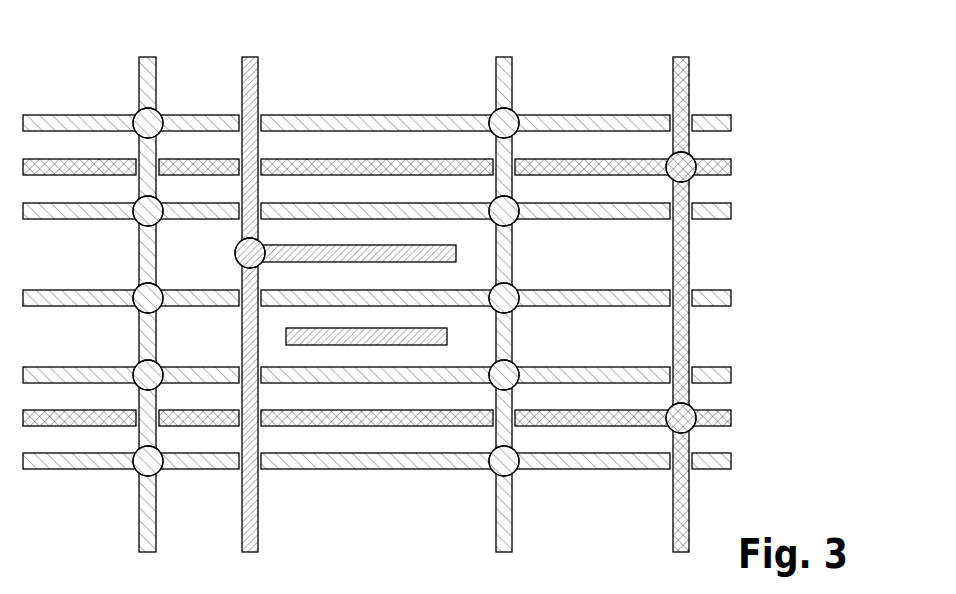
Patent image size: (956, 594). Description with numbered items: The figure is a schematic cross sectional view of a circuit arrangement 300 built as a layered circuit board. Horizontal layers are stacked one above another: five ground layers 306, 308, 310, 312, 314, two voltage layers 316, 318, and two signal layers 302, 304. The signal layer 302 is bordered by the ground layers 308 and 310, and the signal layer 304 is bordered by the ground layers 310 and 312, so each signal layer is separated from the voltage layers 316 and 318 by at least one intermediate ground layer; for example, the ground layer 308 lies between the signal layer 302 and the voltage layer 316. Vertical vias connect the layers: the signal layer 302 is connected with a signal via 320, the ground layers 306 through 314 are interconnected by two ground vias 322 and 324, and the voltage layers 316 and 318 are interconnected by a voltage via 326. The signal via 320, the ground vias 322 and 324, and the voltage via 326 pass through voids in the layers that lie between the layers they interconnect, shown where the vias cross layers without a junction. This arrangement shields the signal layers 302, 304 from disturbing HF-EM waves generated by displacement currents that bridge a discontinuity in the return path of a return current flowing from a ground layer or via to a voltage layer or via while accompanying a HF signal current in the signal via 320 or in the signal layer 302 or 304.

The circuit arrangement 300 is at (720, 93).
The signal layer 302 is at (450, 251).
The signal layer 304 is at (441, 334).
The ground layer 306 is at (732, 124).
The ground layer 308 is at (732, 212).
The ground layer 310 is at (732, 299).
The ground layer 312 is at (732, 376).
The ground layer 314 is at (732, 462).
The voltage layer 316 is at (732, 168).
The voltage layer 318 is at (732, 419).
The signal via 320 is at (249, 62).
The ground via 322 is at (147, 60).
The ground via 324 is at (503, 61).
The voltage via 326 is at (682, 61).